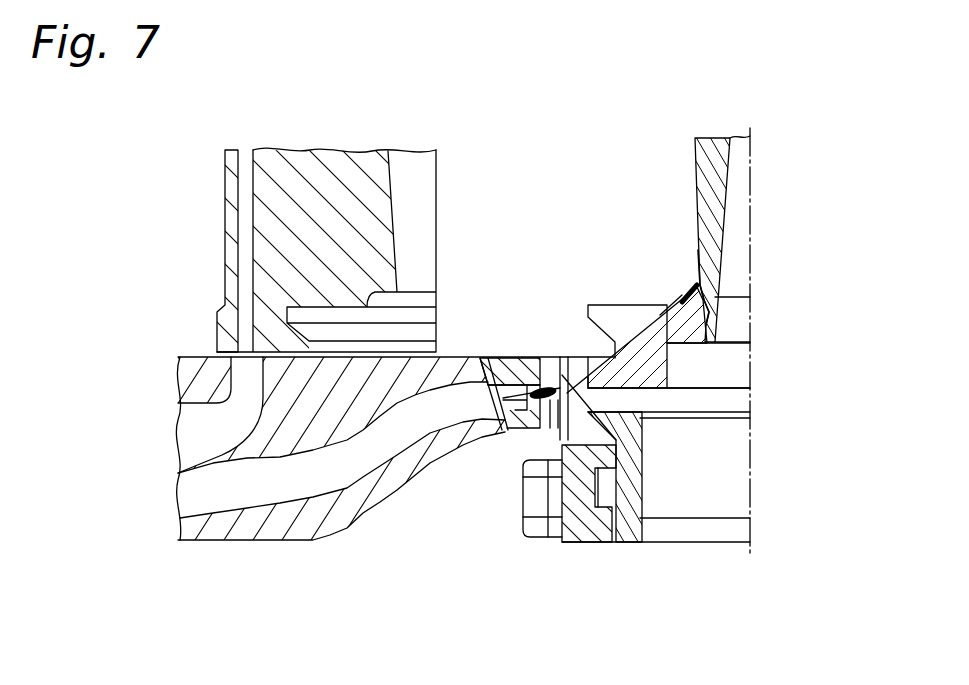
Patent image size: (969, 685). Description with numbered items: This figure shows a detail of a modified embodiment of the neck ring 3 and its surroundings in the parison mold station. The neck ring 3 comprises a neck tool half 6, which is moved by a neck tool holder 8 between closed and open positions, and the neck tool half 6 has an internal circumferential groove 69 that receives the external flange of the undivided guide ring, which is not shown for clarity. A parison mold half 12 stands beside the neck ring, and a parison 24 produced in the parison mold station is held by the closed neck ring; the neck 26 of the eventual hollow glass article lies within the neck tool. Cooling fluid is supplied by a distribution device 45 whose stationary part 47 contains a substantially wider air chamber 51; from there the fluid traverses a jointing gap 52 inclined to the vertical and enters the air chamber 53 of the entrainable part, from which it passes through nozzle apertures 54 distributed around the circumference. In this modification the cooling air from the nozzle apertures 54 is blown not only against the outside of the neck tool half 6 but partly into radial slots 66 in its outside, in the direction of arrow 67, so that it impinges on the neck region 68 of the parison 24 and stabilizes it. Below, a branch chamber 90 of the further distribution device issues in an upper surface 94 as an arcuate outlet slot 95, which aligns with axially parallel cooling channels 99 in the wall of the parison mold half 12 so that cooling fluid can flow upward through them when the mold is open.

The neck ring 3 is at (654, 552).
The neck tool half 6 is at (628, 545).
The neck tool holder 8 is at (572, 545).
The parison mold half 12 is at (347, 150).
The parison 24 is at (696, 160).
The neck 26 is at (710, 346).
The distribution device 45 is at (341, 537).
The stationary part 47 is at (462, 443).
The air chamber 51 is at (399, 456).
The jointing gap 52 is at (481, 357).
The air chamber 53 is at (514, 437).
The nozzle apertures 54 is at (543, 405).
The radial slots 66 is at (620, 306).
The arrow 67 is at (684, 284).
The neck region 68 is at (704, 282).
The internal circumferential groove 69 is at (620, 413).
The branch chamber 90 is at (187, 421).
The upper surface 94 is at (204, 355).
The arcuate outlet slot 95 is at (243, 360).
The cooling channels 99 is at (246, 152).